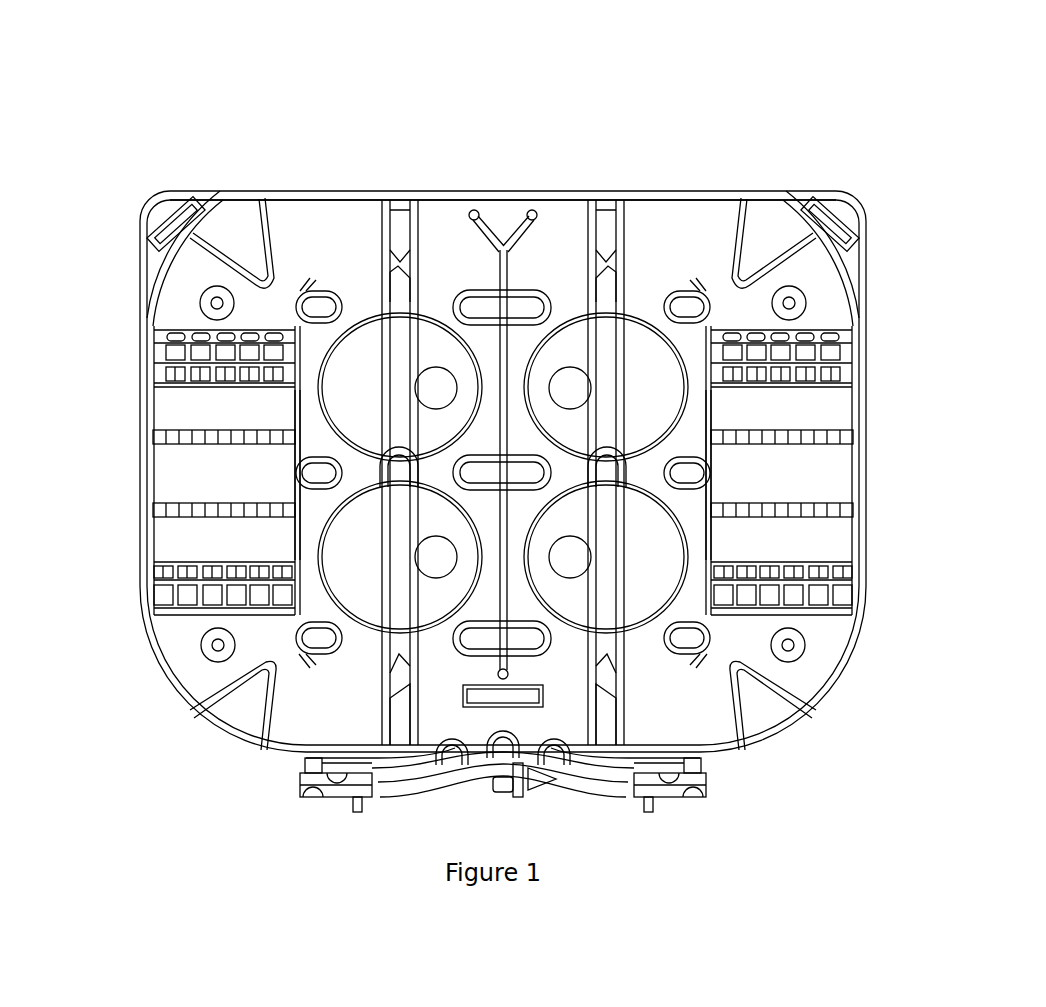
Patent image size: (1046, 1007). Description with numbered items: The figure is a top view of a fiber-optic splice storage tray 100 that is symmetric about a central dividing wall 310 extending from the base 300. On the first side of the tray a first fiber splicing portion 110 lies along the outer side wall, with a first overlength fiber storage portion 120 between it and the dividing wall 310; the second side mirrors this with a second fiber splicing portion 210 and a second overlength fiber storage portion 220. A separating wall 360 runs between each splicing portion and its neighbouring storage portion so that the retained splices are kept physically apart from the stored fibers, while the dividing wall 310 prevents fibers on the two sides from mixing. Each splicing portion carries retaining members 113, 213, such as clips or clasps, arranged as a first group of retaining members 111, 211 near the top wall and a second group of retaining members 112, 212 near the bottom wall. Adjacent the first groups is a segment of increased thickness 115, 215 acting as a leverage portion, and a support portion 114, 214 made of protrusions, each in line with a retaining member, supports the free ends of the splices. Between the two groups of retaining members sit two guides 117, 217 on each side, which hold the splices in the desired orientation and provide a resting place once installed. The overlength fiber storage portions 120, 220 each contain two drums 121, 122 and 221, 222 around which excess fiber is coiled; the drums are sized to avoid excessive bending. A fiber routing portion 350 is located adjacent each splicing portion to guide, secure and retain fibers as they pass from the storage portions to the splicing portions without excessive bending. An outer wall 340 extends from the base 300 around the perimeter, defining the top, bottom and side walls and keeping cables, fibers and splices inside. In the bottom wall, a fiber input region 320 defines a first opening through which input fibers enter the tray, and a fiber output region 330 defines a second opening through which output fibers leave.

The fiber-optic splice storage tray 100 is at (514, 108).
The first fiber splicing portion 110 is at (170, 412).
The first group of retaining members 111 is at (170, 356).
The second group of retaining members 112 is at (150, 563).
The retaining member 113 is at (185, 378).
The support portion 114 is at (185, 333).
The segment of increased thickness 115 is at (170, 374).
The guide 117 is at (150, 502).
The first overlength fiber storage portion 120 is at (377, 278).
The drum 121 is at (365, 300).
The drum 122 is at (327, 593).
The second fiber splicing portion 210 is at (856, 410).
The first group of retaining members 211 is at (860, 366).
The second group of retaining members 212 is at (858, 570).
The retaining member 213 is at (837, 370).
The support portion 214 is at (832, 333).
The segment of increased thickness 215 is at (860, 378).
The guide 217 is at (857, 512).
The second overlength fiber storage portion 220 is at (637, 277).
The drum 221 is at (655, 323).
The drum 222 is at (668, 610).
The base 300 is at (449, 236).
The dividing wall 310 is at (508, 280).
The fiber input region 320 is at (298, 785).
The fiber output region 330 is at (708, 785).
The outer wall 340 is at (688, 190).
The fiber routing portion 350 is at (250, 217).
The separating wall 360 is at (297, 537).